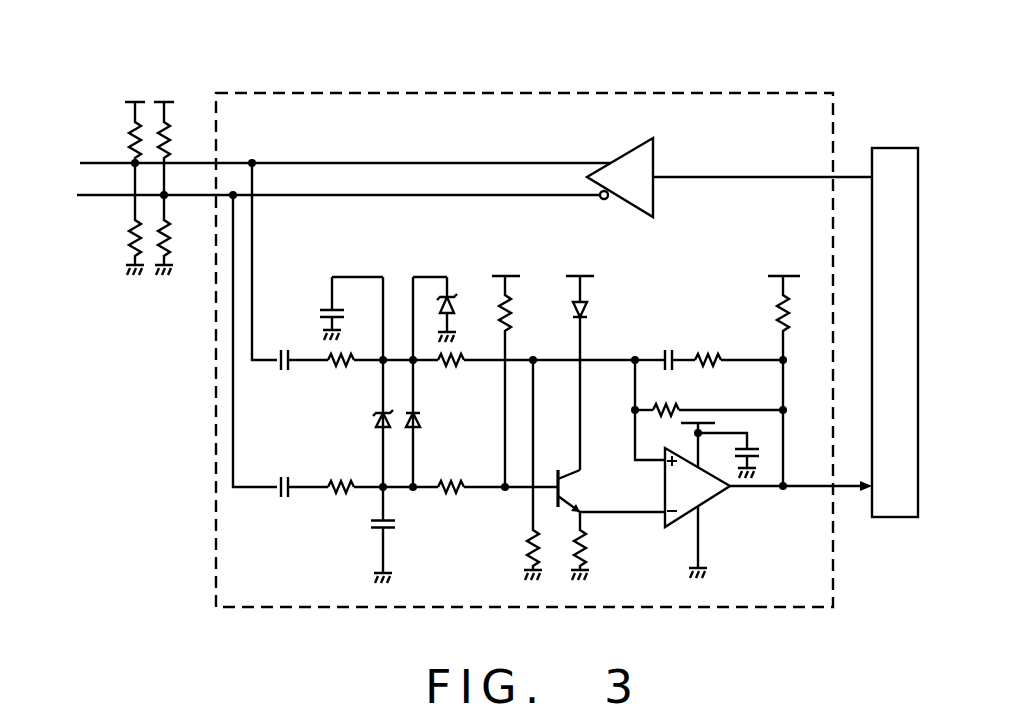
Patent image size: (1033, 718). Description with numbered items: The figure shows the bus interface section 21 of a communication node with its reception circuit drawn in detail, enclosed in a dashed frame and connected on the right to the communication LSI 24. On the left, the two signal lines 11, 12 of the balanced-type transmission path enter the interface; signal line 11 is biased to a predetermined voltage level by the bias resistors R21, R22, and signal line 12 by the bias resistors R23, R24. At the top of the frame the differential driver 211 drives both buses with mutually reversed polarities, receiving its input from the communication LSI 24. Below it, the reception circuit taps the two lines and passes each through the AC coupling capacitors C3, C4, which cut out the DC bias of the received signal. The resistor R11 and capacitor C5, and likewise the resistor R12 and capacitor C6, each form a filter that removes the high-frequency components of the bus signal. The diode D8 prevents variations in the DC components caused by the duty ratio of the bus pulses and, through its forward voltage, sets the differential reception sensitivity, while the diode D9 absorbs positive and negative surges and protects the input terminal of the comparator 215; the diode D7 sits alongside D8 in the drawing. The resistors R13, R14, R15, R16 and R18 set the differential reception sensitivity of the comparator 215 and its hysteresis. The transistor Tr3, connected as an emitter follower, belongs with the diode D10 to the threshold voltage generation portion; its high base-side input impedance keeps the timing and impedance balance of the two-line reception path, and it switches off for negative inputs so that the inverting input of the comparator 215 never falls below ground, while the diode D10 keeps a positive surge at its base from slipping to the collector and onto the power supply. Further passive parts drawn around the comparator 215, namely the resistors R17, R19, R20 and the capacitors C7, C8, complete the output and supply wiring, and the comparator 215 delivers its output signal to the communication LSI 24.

The signal line 11 is at (84, 163).
The signal line 12 is at (86, 195).
The bus interface section 21 is at (736, 93).
The communication LSI 24 is at (901, 147).
The differential driver 211 is at (623, 157).
The comparator 215 is at (713, 503).
The bias resistor R21 is at (116, 132).
The bias resistor R22 is at (114, 219).
The bias resistor R23 is at (182, 148).
The bias resistor R24 is at (183, 235).
The AC coupling capacitor C3 is at (298, 348).
The AC coupling capacitor C4 is at (298, 475).
The filter capacitor C5 is at (337, 308).
The filter capacitor C6 is at (398, 550).
The capacitor C7 is at (665, 348).
The capacitor C8 is at (720, 450).
The filter resistor R11 is at (379, 375).
The filter resistor R12 is at (381, 473).
The sensitivity setting resistor R13 is at (536, 375).
The sensitivity setting resistor R14 is at (497, 473).
The sensitivity setting resistor R15 is at (521, 381).
The sensitivity setting resistor R16 is at (515, 470).
The resistor R17 is at (600, 546).
The hysteresis setting resistor R18 is at (709, 400).
The resistor R19 is at (737, 346).
The resistor R20 is at (764, 381).
The zener diode D7 is at (362, 423).
The diode D8 is at (430, 425).
The surge absorbing diode D9 is at (461, 309).
The diode D10 is at (600, 373).
The transistor Tr3 is at (611, 491).